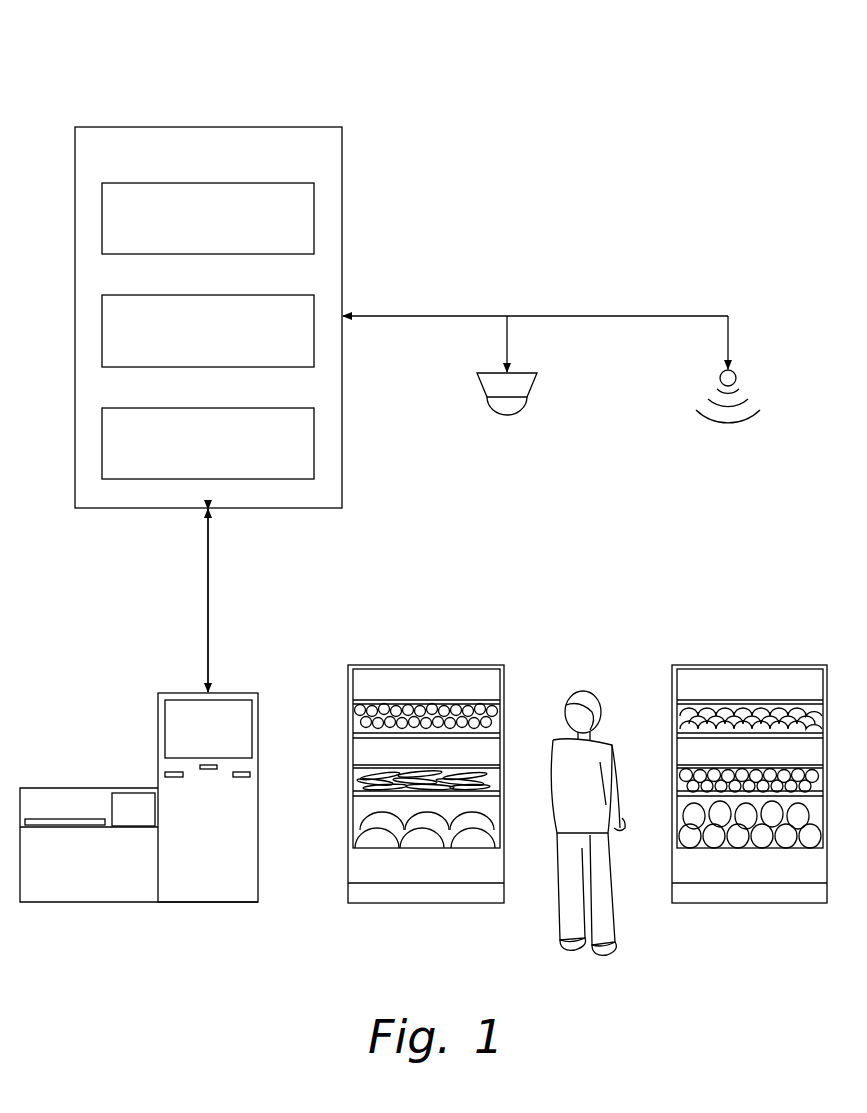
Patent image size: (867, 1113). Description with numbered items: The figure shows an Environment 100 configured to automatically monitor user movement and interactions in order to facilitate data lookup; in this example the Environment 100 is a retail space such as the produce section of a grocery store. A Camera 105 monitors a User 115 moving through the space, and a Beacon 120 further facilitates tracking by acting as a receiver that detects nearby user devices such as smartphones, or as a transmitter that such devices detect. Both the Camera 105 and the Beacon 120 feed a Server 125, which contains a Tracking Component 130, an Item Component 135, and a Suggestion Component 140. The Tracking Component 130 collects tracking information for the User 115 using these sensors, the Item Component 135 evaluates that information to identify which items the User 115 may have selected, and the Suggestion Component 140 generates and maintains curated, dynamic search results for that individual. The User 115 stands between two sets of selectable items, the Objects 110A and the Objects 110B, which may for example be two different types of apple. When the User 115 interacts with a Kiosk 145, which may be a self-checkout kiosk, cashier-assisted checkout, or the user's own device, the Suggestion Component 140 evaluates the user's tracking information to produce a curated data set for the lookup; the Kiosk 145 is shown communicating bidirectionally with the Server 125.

The environment 100 is at (118, 30).
The camera 105 is at (535, 388).
The objects 110A is at (407, 665).
The objects 110B is at (728, 665).
The user 115 is at (580, 685).
The beacon 120 is at (736, 376).
The server 125 is at (263, 127).
The tracking component 130 is at (232, 183).
The item component 135 is at (232, 295).
The suggestion component 140 is at (232, 408).
The kiosk 145 is at (98, 786).